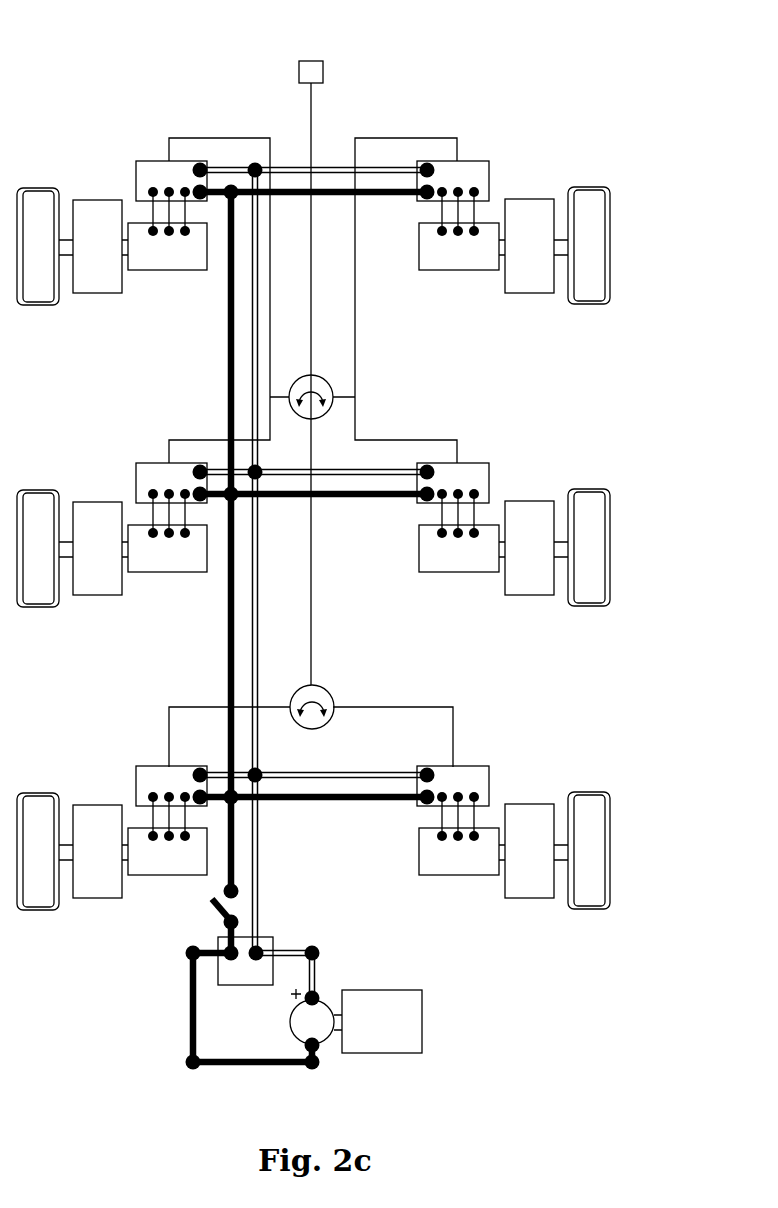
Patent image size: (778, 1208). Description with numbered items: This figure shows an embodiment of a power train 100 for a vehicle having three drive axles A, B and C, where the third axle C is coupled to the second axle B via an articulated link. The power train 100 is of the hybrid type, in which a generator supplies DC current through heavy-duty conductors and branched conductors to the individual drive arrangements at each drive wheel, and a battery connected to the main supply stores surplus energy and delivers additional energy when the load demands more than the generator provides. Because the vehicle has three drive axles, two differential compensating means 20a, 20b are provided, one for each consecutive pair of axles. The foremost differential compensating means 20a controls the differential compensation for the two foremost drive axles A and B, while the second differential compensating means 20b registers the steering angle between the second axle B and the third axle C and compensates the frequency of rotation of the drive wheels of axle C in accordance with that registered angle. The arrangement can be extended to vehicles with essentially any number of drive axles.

The power train 100 is at (95, 50).
The differential compensating means 20a is at (328, 375).
The differential compensating means 20b is at (330, 682).